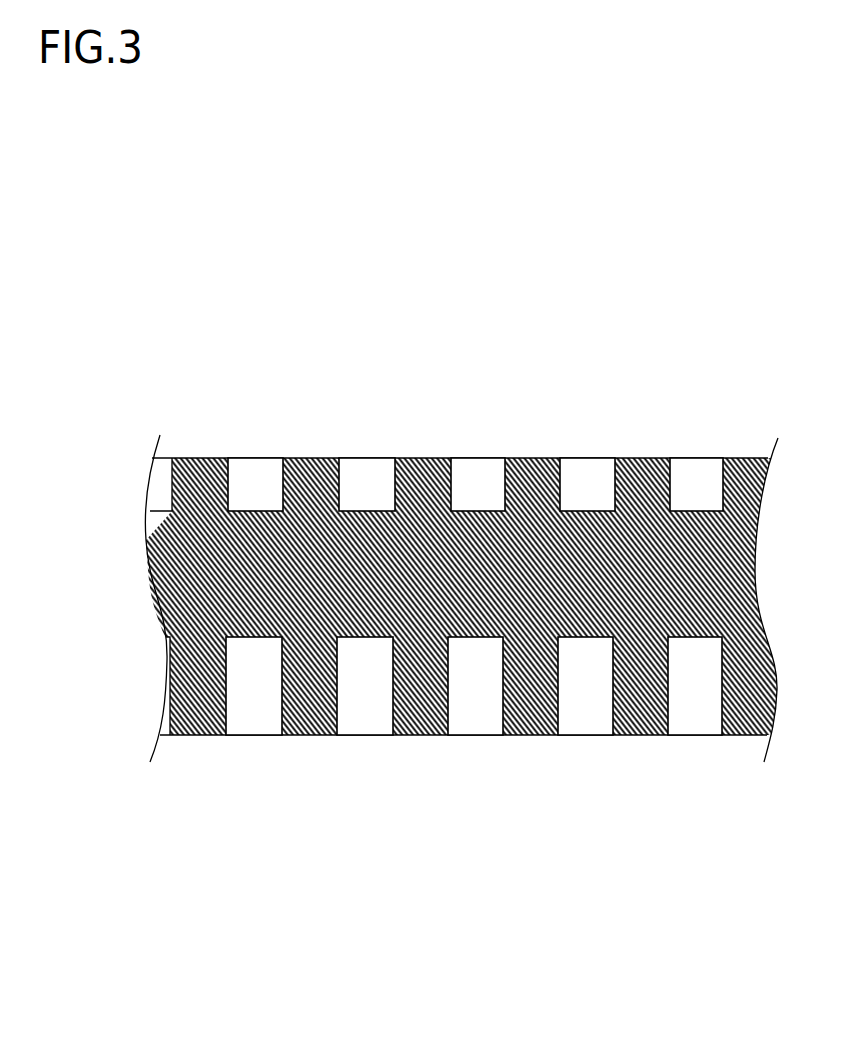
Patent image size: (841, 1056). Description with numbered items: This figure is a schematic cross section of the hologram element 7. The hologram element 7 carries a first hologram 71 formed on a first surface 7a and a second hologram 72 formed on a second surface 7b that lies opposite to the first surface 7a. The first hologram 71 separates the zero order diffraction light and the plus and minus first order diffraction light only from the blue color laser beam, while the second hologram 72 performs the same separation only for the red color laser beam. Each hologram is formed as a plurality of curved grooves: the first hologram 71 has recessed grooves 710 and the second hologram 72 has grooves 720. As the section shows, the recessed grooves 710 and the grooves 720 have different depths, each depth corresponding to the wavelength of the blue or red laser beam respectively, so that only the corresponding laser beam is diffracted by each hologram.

The hologram element 7 is at (146, 299).
The first surface 7a is at (208, 448).
The second surface 7b is at (206, 746).
The first hologram 71 is at (295, 457).
The recessed grooves 710 is at (688, 482).
The second hologram 72 is at (653, 736).
The curved grooves 720 is at (693, 692).